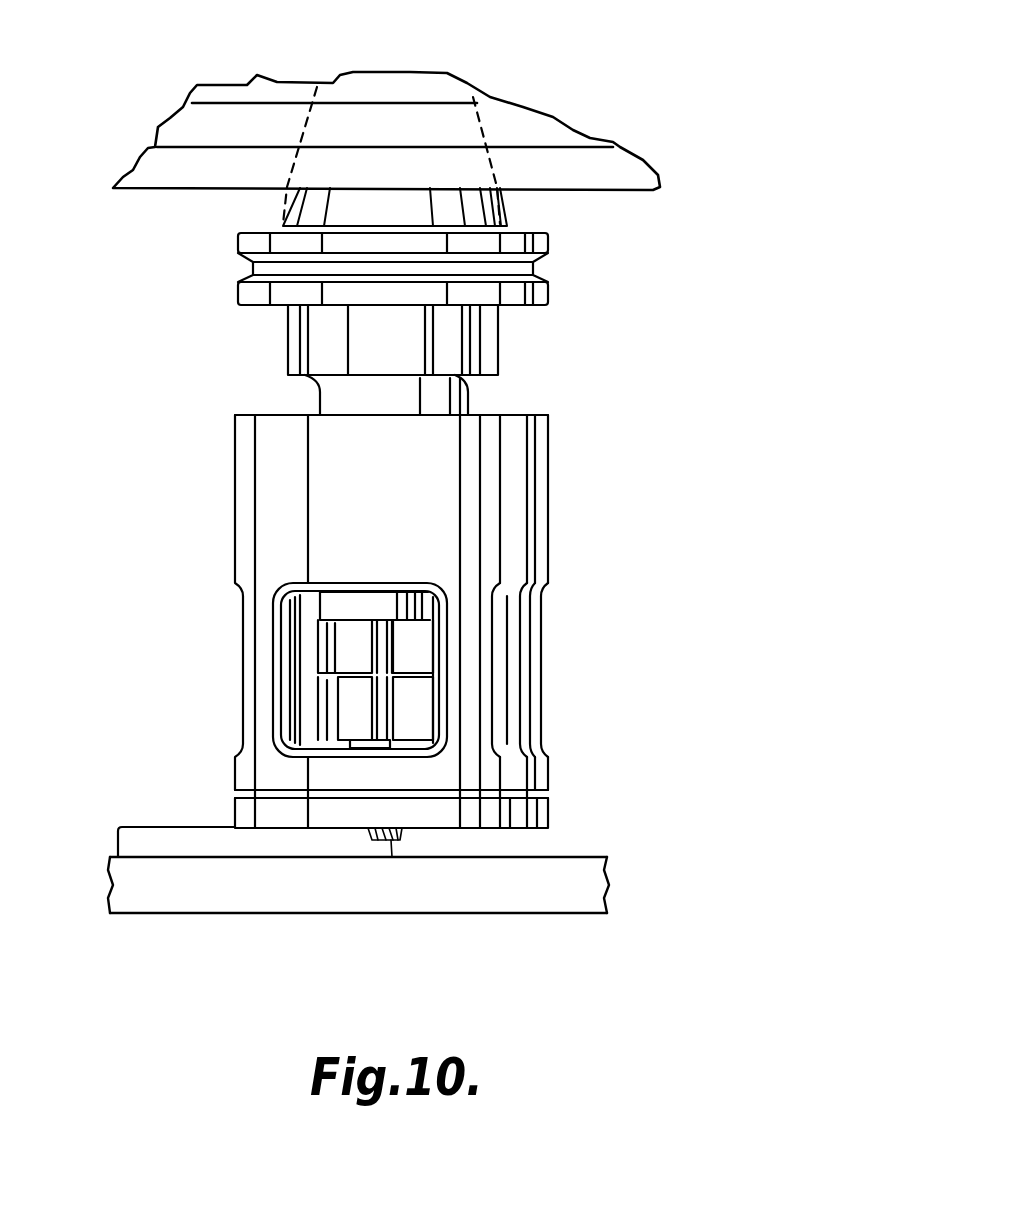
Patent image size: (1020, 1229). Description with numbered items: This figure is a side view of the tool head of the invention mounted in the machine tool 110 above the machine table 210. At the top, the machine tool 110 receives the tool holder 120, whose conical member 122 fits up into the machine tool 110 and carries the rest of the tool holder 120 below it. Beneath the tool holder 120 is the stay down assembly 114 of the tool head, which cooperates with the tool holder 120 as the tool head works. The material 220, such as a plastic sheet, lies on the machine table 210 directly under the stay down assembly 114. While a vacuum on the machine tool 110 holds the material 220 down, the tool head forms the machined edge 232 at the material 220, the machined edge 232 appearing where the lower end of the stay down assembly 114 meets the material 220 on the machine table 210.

The machine tool 110 is at (582, 142).
The conical member 122 is at (503, 200).
The tool holder 120 is at (588, 312).
The stay down assembly 114 is at (578, 517).
The machined edge 232 is at (367, 833).
The material 220 is at (163, 845).
The machine table 210 is at (502, 890).